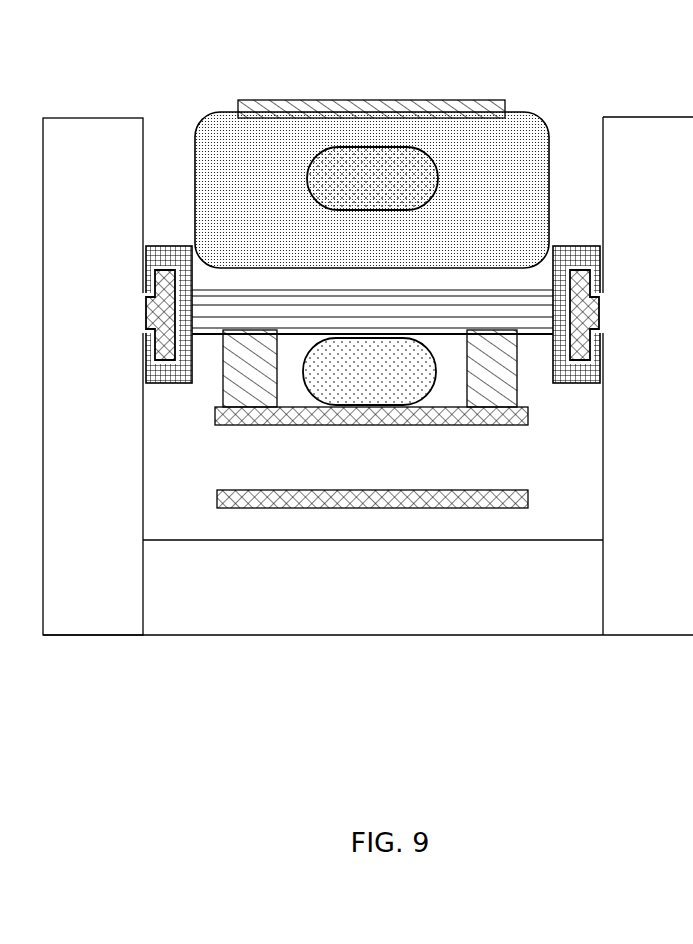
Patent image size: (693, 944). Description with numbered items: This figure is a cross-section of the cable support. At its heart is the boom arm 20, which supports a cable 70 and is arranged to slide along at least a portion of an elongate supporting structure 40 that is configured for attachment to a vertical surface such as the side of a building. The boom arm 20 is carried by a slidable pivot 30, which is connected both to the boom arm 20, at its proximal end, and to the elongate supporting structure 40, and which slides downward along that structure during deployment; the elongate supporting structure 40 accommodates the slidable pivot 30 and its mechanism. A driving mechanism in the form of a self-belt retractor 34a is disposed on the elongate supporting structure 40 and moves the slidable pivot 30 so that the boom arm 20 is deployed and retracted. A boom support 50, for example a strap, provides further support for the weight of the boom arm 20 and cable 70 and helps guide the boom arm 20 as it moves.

The boom arm 20 is at (361, 248).
The slidable pivot 30 is at (168, 245).
The self-belt retractor 34a is at (528, 408).
The elongate supporting structure 40 is at (223, 637).
The boom support 50 is at (300, 105).
The cable 70 is at (361, 188).